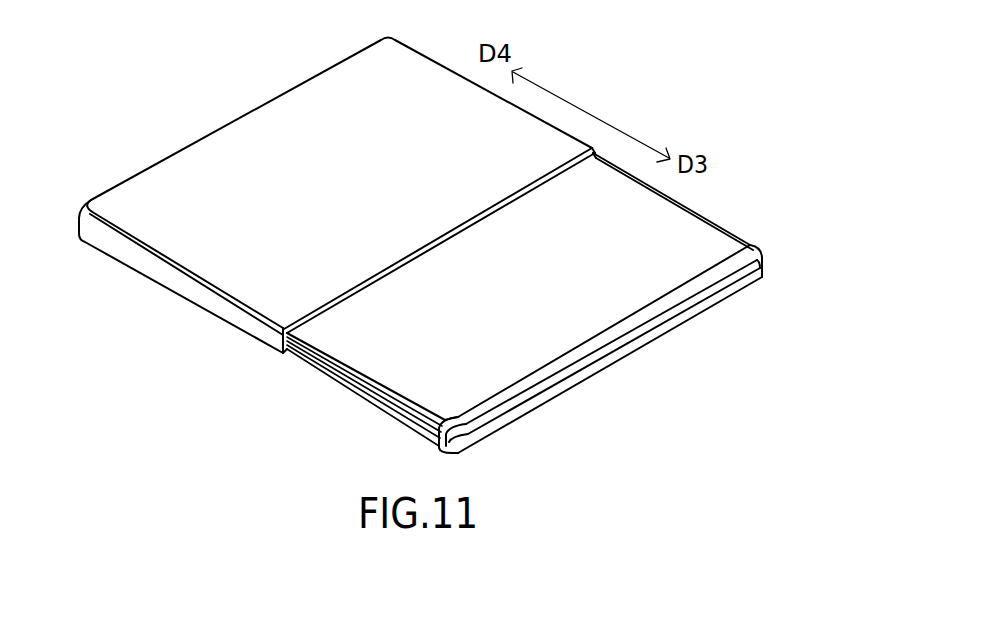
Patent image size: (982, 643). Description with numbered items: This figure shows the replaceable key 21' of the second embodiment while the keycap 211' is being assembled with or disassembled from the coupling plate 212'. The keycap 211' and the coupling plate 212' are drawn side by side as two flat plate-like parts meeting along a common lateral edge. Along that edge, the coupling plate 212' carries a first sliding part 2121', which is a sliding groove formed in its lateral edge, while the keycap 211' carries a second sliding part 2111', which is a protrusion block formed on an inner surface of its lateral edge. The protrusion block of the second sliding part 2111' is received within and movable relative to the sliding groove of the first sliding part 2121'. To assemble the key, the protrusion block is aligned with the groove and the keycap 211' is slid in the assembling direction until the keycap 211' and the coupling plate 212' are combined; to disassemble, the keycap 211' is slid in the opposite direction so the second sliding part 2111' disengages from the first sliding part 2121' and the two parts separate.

The replaceable key 21' is at (422, 244).
The keycap 211' is at (337, 196).
The coupling plate 212' is at (526, 303).
The second sliding part 2111' is at (286, 369).
The first sliding part 2121' is at (364, 397).